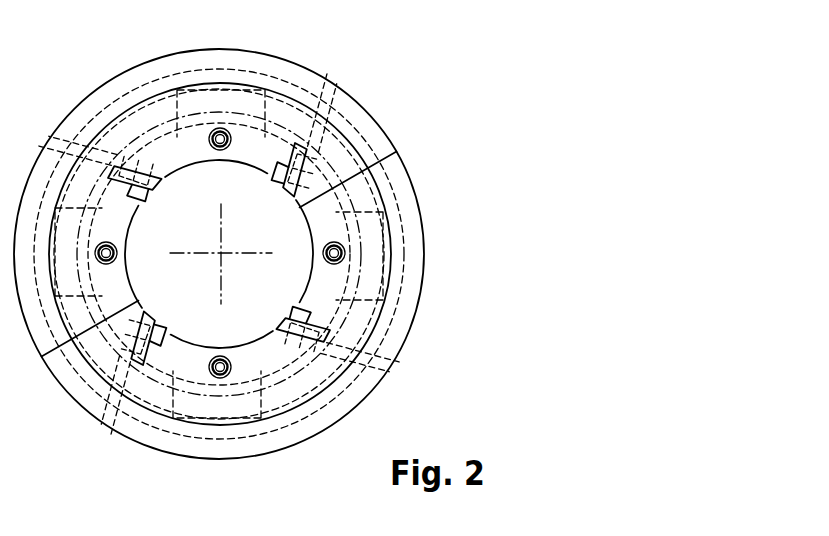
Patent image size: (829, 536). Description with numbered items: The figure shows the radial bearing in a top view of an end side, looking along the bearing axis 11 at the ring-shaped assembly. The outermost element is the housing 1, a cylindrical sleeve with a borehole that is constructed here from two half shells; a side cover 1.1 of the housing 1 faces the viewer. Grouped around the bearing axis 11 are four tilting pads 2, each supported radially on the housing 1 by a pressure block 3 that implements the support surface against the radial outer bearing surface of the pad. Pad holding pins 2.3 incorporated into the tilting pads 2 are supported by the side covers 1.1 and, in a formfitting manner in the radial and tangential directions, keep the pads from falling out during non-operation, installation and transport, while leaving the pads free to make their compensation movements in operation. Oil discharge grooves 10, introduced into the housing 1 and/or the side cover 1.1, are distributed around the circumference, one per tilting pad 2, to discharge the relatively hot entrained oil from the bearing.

The housing 1 is at (367, 121).
The side cover 1.1 is at (137, 121).
The tilting pad 2 is at (200, 135).
The pad holding pin 2.3 is at (345, 254).
The pressure block 3 is at (247, 100).
The oil discharge groove 10 is at (330, 320).
The central axis 11 is at (223, 253).